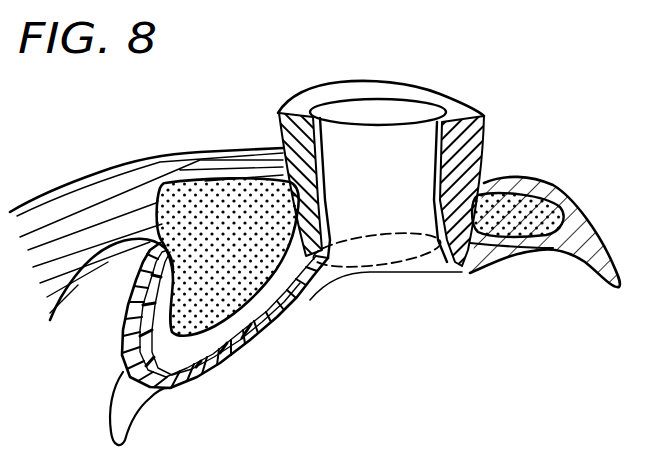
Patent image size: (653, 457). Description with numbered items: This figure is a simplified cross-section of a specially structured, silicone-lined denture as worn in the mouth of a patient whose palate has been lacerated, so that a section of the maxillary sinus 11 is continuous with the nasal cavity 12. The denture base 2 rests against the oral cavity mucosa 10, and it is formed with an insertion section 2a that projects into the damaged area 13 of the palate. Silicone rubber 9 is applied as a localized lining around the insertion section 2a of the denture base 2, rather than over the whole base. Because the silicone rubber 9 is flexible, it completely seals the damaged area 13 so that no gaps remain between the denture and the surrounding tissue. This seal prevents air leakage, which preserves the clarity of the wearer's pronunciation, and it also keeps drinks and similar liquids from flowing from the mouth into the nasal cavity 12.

The denture base 2 is at (280, 307).
The insertion section 2a is at (385, 227).
The silicone rubber 9 is at (280, 106).
The oral cavity mucosa 10 is at (210, 370).
The maxillary sinus 11 is at (78, 178).
The nasal cavity 12 is at (385, 78).
The damaged area 13 is at (280, 174).